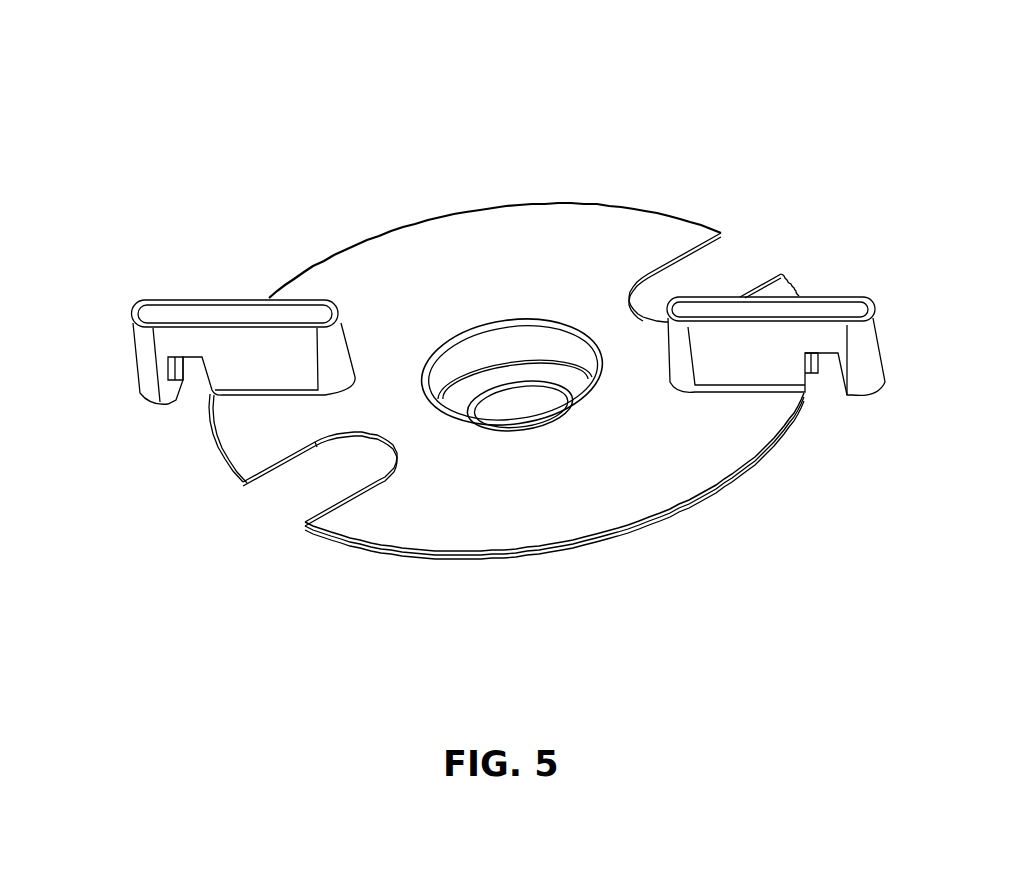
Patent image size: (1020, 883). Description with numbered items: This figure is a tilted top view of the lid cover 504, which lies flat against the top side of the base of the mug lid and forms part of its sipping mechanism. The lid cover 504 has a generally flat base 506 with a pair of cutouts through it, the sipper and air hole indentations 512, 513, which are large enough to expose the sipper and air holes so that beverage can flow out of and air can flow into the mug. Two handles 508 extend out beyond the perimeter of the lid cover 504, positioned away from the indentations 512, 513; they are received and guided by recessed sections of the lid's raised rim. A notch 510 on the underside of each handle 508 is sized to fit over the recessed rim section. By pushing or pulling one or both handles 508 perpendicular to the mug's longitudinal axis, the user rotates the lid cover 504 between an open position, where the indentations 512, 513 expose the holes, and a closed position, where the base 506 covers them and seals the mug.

The lid cover 504 is at (484, 84).
The base 506 is at (625, 486).
The handle 508 is at (150, 312).
The notch 510 is at (188, 393).
The sipper hole indentation 512 is at (300, 487).
The air hole indentation 513 is at (723, 268).